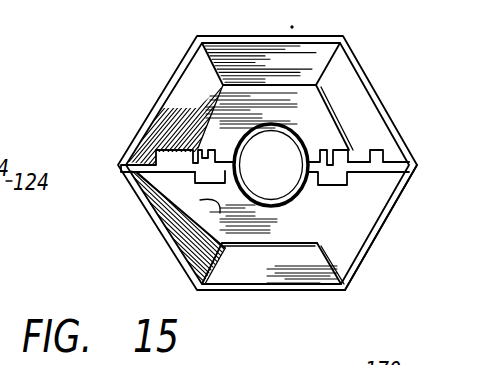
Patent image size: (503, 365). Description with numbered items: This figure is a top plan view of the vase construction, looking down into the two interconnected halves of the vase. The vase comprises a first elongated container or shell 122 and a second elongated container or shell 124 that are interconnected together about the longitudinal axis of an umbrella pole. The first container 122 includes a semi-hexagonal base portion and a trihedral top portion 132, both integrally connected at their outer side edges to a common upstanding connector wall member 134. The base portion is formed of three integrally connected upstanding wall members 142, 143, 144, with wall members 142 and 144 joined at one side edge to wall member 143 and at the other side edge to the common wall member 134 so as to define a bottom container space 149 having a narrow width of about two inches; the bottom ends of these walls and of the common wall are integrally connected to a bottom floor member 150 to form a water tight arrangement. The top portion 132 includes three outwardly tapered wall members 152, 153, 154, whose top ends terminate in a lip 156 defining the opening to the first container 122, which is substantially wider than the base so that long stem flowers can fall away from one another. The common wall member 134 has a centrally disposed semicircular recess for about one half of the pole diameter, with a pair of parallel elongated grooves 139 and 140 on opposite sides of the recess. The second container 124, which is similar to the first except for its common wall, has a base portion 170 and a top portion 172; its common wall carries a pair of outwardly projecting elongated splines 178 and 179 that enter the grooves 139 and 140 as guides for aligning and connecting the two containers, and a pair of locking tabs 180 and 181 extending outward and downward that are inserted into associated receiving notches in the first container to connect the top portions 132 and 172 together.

The first elongated container or shell 122 is at (170, 54).
The second elongated container or shell 124 is at (364, 283).
The trihedral top portion 132 is at (153, 258).
The common upstanding connector wall member 134 is at (140, 163).
The elongated groove 139 is at (172, 152).
The elongated groove 140 is at (330, 162).
The upstanding wall member 142 is at (210, 226).
The upstanding wall member 143 is at (262, 240).
The upstanding wall member 144 is at (327, 230).
The bottom container space 149 is at (212, 240).
The bottom floor member 150 is at (322, 214).
The outwardly tapered wall member 152 is at (160, 208).
The outwardly tapered wall member 153 is at (224, 272).
The outwardly tapered wall member 154 is at (325, 293).
The lip 156 is at (283, 294).
The base portion 170 is at (309, 74).
The top portion 172 is at (375, 60).
The elongated spline 178 is at (192, 178).
The elongated spline 179 is at (348, 160).
The locking tab 180 is at (372, 150).
The locking tab 181 is at (137, 168).